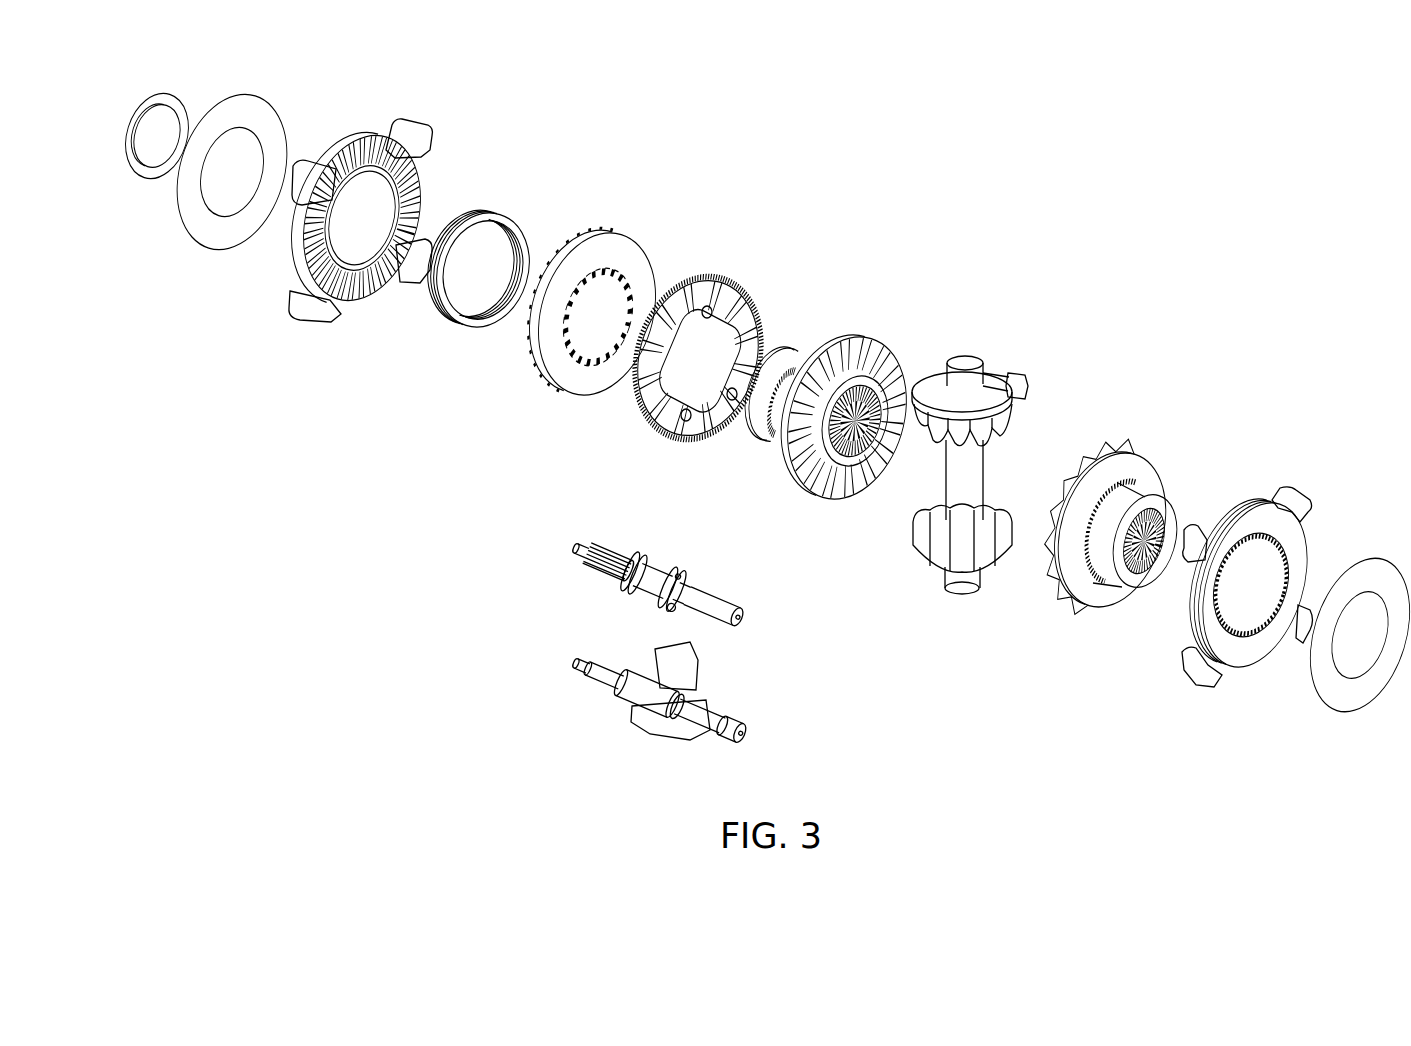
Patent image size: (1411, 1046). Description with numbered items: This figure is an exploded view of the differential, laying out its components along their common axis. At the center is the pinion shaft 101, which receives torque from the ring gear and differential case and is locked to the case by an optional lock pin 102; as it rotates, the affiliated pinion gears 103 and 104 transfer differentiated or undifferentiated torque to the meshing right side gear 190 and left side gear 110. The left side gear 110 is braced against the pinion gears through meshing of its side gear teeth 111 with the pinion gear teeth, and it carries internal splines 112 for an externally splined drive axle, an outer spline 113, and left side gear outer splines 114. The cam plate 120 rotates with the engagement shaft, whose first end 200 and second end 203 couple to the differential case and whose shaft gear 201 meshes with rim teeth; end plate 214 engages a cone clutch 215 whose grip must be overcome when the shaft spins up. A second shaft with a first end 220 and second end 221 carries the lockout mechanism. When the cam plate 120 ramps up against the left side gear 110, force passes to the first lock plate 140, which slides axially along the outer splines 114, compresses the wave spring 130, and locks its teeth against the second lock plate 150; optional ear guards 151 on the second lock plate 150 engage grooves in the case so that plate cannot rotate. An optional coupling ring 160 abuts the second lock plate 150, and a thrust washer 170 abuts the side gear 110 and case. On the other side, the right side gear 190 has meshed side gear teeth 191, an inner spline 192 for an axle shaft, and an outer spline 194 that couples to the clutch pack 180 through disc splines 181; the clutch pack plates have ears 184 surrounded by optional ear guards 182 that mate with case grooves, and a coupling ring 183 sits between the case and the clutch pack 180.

The pinion shaft 101 is at (994, 462).
The lock pin 102 is at (1016, 378).
The pinion gear 103 is at (1012, 412).
The pinion gear 104 is at (985, 570).
The left side gear 110 is at (843, 406).
The side gear teeth 111 is at (895, 378).
The internal splines 112 is at (853, 468).
The hub 113 is at (768, 430).
The left side gear outer splines 114 is at (780, 368).
The cam plate 120 is at (718, 276).
The wave spring 130 is at (497, 213).
The first lock plate 140 is at (606, 234).
The second lock plate 150 is at (363, 202).
The ear guards 151 is at (426, 140).
The coupling ring 160 is at (250, 97).
The thrust washer 170 is at (165, 93).
The clutch pack 180 is at (1260, 589).
The disc splines 181 is at (1285, 578).
The ear guards 182 is at (1206, 690).
The coupling ring 183 is at (1378, 560).
The ears 184 is at (1287, 633).
The right side gear 190 is at (1107, 506).
The side gear teeth 191 is at (1085, 452).
The inner spline 192 is at (1140, 565).
The outer spline 194 is at (1155, 495).
The first end 200 is at (657, 572).
The shaft gear 201 is at (609, 562).
The second end 203 is at (715, 607).
The end plate 214 is at (671, 607).
The cone clutch 215 is at (672, 589).
The first end 220 is at (653, 673).
The second end 221 is at (732, 729).